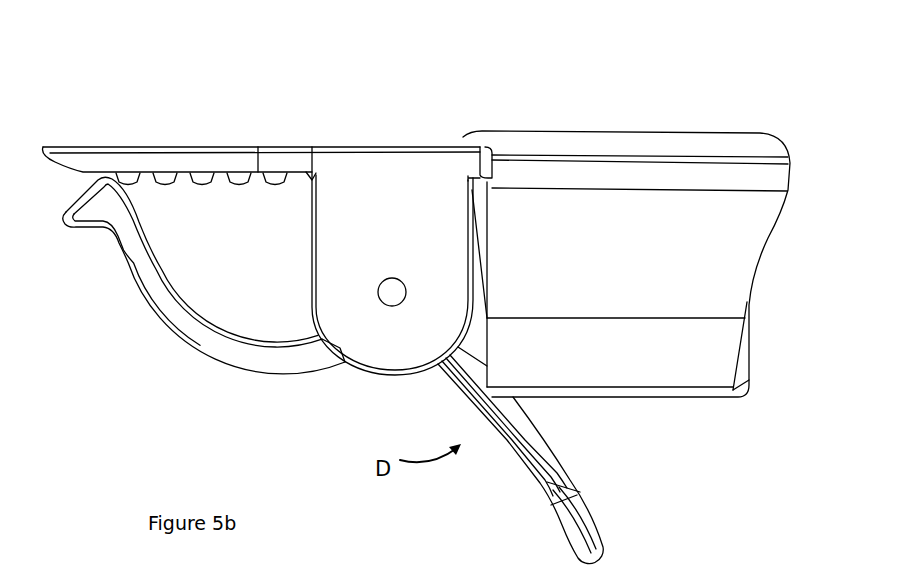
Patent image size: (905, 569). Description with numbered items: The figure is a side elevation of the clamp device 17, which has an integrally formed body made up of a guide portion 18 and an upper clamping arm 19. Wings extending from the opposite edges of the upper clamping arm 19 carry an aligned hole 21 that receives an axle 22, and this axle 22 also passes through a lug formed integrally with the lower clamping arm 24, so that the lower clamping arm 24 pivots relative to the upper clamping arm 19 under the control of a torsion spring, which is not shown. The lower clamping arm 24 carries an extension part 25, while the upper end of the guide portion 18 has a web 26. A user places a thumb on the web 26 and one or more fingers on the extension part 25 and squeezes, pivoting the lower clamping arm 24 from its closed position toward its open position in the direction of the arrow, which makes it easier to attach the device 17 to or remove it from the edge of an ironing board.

The device 17 is at (190, 99).
The guide portion 18 is at (788, 302).
The upper clamping arm 19 is at (254, 140).
The hole 21 is at (385, 280).
The axle 22 is at (390, 292).
The lower clamping arm 24 is at (206, 340).
The extension part 25 is at (548, 482).
The web 26 is at (714, 294).